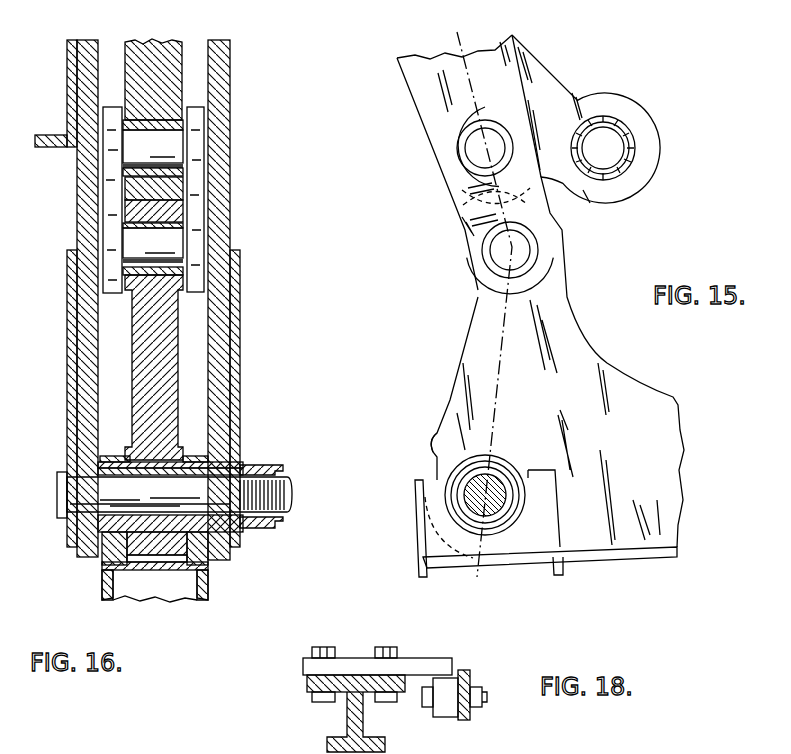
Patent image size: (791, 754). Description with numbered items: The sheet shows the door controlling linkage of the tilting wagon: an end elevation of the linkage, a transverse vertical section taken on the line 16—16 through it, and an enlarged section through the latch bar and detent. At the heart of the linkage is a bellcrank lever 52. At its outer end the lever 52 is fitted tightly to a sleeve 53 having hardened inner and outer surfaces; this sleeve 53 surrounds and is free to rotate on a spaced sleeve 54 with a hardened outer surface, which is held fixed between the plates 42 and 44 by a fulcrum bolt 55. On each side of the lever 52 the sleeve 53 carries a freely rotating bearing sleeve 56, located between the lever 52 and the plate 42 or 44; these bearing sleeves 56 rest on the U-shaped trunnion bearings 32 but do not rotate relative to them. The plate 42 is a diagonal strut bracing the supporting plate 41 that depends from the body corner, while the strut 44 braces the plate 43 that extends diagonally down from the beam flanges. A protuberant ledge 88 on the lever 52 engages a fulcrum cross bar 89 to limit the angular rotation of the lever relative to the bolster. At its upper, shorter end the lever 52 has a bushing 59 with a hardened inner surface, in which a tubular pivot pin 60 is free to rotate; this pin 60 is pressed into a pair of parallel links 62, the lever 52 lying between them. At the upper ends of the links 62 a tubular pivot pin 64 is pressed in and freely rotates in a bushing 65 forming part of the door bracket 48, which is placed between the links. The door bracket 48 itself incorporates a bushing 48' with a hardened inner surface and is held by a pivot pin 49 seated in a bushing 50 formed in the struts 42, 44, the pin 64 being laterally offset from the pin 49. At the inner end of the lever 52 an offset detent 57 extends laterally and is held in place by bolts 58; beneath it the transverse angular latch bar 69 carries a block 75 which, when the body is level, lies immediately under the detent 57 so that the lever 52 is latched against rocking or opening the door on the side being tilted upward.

In FIG. 15, the section line 16 is at (460, 37).
In FIG. 16, the U-shaped trunnion bearing 32 is at (107, 552).
In FIG. 15, the U-shaped trunnion bearing 32 is at (540, 533).
In FIG. 16, the supporting plate 41 is at (70, 263).
In FIG. 16, the diagonal strut 42 is at (87, 292).
In FIG. 16, the plate 43 is at (240, 275).
In FIG. 16, the strut 44 is at (220, 312).
In FIG. 16, the door bracket 48 is at (153, 61).
In FIG. 15, the door bracket 48 is at (451, 162).
In FIG. 15, the bushing 48' is at (636, 148).
In FIG. 15, the pivot pin 49 is at (620, 157).
In FIG. 15, the bushing 50 is at (613, 172).
In FIG. 16, the bellcrank lever 52 is at (170, 357).
In FIG. 15, the bellcrank lever 52 is at (473, 333).
In FIG. 18, the bellcrank lever 52 is at (353, 708).
In FIG. 16, the sleeve 53 is at (202, 461).
In FIG. 15, the sleeve 53 is at (455, 485).
In FIG. 16, the spaced sleeve 54 is at (210, 471).
In FIG. 15, the spaced sleeve 54 is at (463, 502).
In FIG. 16, the fulcrum bolt 55 is at (290, 505).
In FIG. 15, the fulcrum bolt 55 is at (483, 513).
In FIG. 16, the bearing sleeve 56 is at (112, 455).
In FIG. 15, the bearing sleeve 56 is at (453, 472).
In FIG. 18, the offset detent 57 is at (413, 672).
In FIG. 18, the bolt 58 is at (328, 647).
In FIG. 16, the bushing 59 is at (180, 210).
In FIG. 16, the tubular pivot pin 60 is at (177, 247).
In FIG. 15, the tubular pivot pin 60 is at (487, 243).
In FIG. 16, the parallel link 62 is at (197, 163).
In FIG. 15, the parallel link 62 is at (467, 203).
In FIG. 16, the tubular pivot pin 64 is at (172, 155).
In FIG. 15, the tubular pivot pin 64 is at (460, 147).
In FIG. 16, the bushing 65 is at (153, 127).
In FIG. 18, the latch bar 69 is at (470, 680).
In FIG. 18, the block 75 is at (444, 705).
In FIG. 15, the protuberant ledge 88 is at (433, 447).
In FIG. 15, the fulcrum cross bar 89 is at (440, 482).